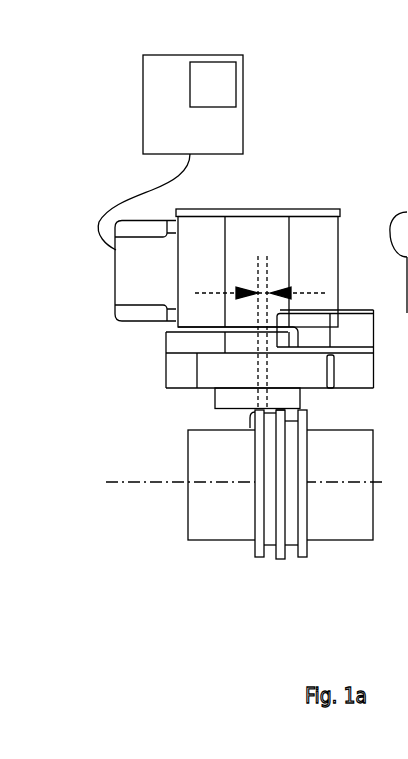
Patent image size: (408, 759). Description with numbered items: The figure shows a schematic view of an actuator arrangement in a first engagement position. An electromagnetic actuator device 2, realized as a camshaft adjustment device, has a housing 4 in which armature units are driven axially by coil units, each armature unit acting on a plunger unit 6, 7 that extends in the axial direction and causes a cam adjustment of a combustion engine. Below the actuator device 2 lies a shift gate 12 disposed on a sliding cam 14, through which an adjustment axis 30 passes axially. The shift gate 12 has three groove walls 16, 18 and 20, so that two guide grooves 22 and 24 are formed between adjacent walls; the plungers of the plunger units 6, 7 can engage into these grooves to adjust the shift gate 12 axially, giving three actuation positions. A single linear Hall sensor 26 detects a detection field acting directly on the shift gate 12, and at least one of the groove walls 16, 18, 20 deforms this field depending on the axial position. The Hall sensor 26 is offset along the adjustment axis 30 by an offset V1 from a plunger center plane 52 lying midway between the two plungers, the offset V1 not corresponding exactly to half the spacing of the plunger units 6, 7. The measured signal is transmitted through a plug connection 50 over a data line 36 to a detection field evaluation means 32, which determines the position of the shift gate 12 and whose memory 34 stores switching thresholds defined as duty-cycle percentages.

The electromagnetic actuator device 2 is at (277, 203).
The housing 4 is at (317, 210).
The plunger unit 6 is at (250, 413).
The plunger unit 7 is at (300, 408).
The shift gate 12 is at (240, 516).
The sliding cam 14 is at (188, 460).
The groove wall 16 is at (255, 528).
The groove wall 18 is at (306, 528).
The groove wall 20 is at (283, 531).
The guide groove 22 is at (270, 547).
The guide groove 24 is at (288, 547).
The linear Hall sensor 26 is at (250, 416).
The adjustment axis 30 is at (142, 483).
The detection field evaluation means 32 is at (243, 128).
The memory 34 is at (243, 88).
The data line 36 is at (133, 195).
The plug connection 50 is at (115, 267).
The plunger center plane 52 is at (255, 264).
The offset V1 is at (264, 279).